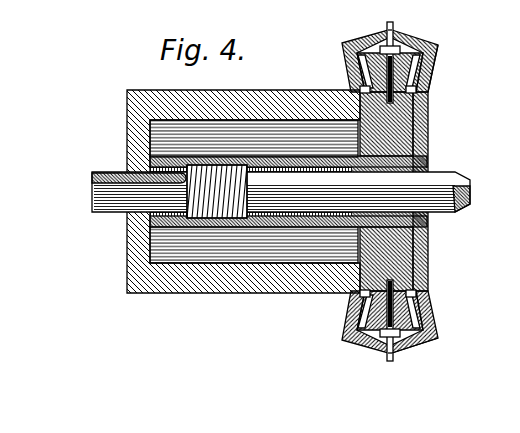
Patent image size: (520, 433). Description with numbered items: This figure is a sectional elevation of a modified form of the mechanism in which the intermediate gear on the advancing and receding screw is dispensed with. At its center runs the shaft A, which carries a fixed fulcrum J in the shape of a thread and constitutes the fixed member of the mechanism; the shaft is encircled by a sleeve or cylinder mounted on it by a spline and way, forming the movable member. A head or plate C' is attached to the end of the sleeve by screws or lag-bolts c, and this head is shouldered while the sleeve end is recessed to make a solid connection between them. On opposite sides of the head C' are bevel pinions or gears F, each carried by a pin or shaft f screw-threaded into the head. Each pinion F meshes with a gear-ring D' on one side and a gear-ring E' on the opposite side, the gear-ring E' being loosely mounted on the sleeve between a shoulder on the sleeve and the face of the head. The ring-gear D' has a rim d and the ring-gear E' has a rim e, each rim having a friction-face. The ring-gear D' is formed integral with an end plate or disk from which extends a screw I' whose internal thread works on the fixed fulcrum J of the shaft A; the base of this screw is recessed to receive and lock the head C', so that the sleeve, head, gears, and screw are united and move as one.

The shaft A is at (434, 177).
The fixed fulcrum J is at (228, 218).
The screw I' is at (288, 148).
The head or plate C' is at (413, 188).
The gear-ring D' is at (425, 191).
The upper brush frame arm F' is at (397, 61).
The bevel pinion or gear F is at (394, 317).
The gear-ring E' is at (363, 194).
The pin or shaft f is at (342, 58).
The rim d is at (405, 188).
The rim e is at (372, 191).
The lower frame edge a is at (415, 350).
The screws or lag-bolts c is at (453, 68).